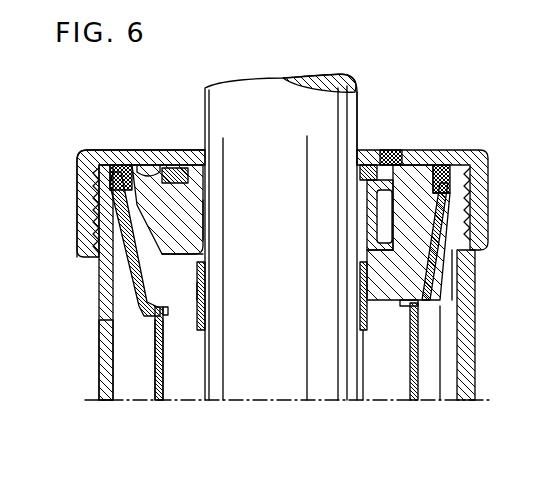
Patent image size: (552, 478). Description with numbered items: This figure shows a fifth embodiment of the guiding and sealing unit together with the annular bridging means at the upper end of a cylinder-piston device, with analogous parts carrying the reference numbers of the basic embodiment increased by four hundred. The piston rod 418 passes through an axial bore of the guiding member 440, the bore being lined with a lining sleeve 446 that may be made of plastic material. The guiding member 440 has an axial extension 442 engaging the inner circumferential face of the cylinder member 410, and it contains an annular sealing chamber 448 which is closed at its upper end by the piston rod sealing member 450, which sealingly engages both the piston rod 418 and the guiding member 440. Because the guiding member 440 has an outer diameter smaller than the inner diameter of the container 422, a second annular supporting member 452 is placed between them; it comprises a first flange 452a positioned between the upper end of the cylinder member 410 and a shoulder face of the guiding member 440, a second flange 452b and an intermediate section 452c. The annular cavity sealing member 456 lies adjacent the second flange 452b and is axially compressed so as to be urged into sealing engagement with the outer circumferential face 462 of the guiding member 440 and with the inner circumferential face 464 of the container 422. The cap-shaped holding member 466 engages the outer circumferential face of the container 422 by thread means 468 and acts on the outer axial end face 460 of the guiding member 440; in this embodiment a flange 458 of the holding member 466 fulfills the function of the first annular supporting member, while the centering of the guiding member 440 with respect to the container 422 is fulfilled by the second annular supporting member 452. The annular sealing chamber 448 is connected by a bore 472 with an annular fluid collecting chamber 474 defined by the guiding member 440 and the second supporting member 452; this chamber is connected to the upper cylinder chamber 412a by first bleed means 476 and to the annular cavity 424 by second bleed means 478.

The cylinder member 410 is at (160, 404).
The upper cylinder chamber 412a is at (390, 385).
The piston rod 418 is at (280, 392).
The container 422 is at (470, 340).
The annular cavity 424 is at (447, 386).
The guiding member 440 is at (407, 280).
The axial extension 442 is at (203, 342).
The lining sleeve 446 is at (360, 296).
The annular sealing chamber 448 is at (208, 228).
The piston rod sealing member 450 is at (357, 165).
The second annular supporting member 452 is at (100, 316).
The first flange 452a is at (106, 340).
The second flange 452b is at (95, 203).
The intermediate section 452c is at (100, 268).
The annular cavity sealing member 456 is at (455, 152).
The flange of the holding member 458 is at (392, 152).
The outer axial end face 460 is at (146, 165).
The outer circumferential face 462 is at (82, 232).
The inner circumferential face 464 is at (130, 390).
The holding member 466 is at (127, 165).
The thread means 468 is at (470, 200).
The bore 472 is at (203, 240).
The annular fluid collecting chamber 474 is at (200, 283).
The first bleed means 476 is at (166, 342).
The second bleed means 478 is at (99, 286).